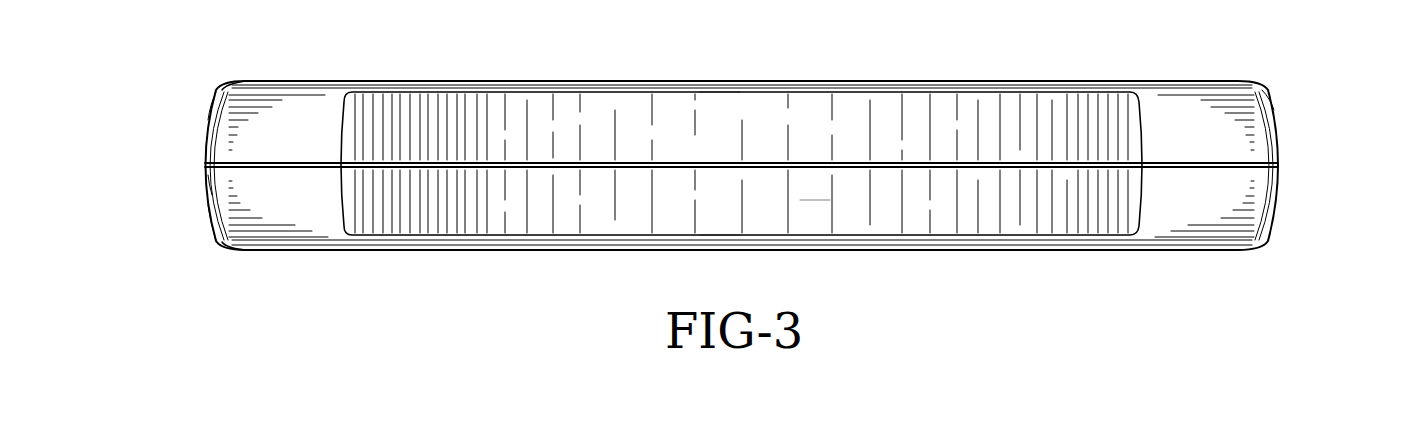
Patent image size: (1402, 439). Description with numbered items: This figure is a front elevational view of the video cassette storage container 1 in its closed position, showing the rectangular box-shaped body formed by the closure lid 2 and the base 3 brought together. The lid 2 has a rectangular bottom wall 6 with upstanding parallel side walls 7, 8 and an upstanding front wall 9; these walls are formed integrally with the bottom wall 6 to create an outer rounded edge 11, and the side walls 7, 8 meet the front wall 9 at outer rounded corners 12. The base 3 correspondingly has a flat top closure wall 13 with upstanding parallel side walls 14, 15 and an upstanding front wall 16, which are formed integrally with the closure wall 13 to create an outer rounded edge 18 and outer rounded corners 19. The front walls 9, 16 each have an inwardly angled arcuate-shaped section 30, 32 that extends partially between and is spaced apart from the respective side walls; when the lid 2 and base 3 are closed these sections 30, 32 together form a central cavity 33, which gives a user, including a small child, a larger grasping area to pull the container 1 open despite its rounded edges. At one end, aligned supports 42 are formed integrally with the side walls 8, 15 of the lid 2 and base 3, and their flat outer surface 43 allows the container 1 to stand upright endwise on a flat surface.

The video cassette storage container 1 is at (1104, 48).
The closure lid 2 is at (499, 238).
The base 3 is at (499, 90).
The bottom wall 6 is at (615, 250).
The side wall 7 is at (212, 216).
The side wall 8 is at (1272, 220).
The front wall 9 is at (317, 210).
The outer rounded edge 11 is at (222, 244).
The outer rounded corners 12 is at (215, 186).
The top closure wall 13 is at (858, 82).
The side wall 14 is at (212, 120).
The side wall 15 is at (1277, 112).
The front wall 16 is at (298, 122).
The outer rounded edge 18 is at (222, 88).
The outer rounded corners 19 is at (215, 145).
The inwardly angled arcuate-shaped section 30 is at (722, 216).
The inwardly angled arcuate-shaped section 32 is at (718, 116).
The central cavity 33 is at (814, 210).
The supports 42 is at (1270, 84).
The flat outer surface 43 is at (1275, 103).